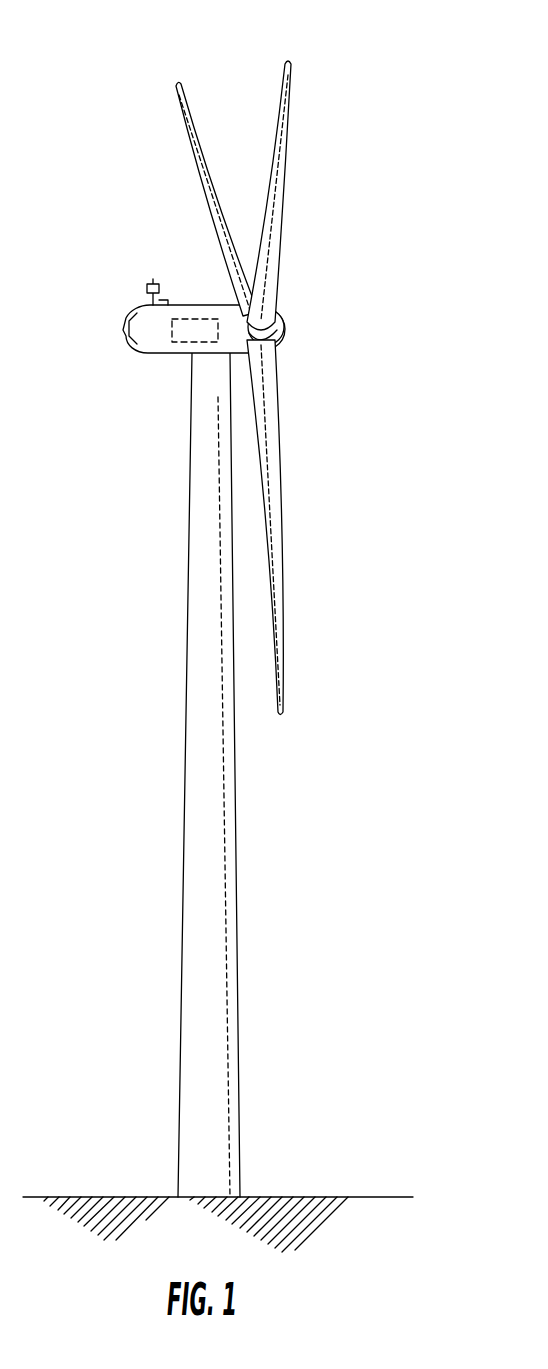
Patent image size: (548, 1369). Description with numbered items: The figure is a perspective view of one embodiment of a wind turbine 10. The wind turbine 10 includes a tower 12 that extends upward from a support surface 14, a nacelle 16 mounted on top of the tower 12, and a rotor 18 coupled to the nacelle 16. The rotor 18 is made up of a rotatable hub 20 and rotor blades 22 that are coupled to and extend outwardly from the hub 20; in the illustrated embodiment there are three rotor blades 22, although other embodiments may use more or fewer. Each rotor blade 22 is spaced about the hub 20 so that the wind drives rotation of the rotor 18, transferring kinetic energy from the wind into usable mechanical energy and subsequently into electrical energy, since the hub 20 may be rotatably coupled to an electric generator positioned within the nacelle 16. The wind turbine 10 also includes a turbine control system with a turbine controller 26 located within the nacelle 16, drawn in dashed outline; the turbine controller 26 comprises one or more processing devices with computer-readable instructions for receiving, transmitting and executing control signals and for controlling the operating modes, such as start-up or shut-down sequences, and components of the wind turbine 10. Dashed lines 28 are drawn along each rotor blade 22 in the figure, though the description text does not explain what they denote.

The wind turbine 10 is at (130, 150).
The tower 12 is at (195, 890).
The support surface 14 is at (102, 1197).
The nacelle 16 is at (197, 318).
The rotor 18 is at (307, 365).
The rotatable hub 20 is at (288, 333).
The rotor blade 22 is at (258, 365).
The turbine controller 26 is at (192, 316).
The pitch axis 28 is at (200, 177).